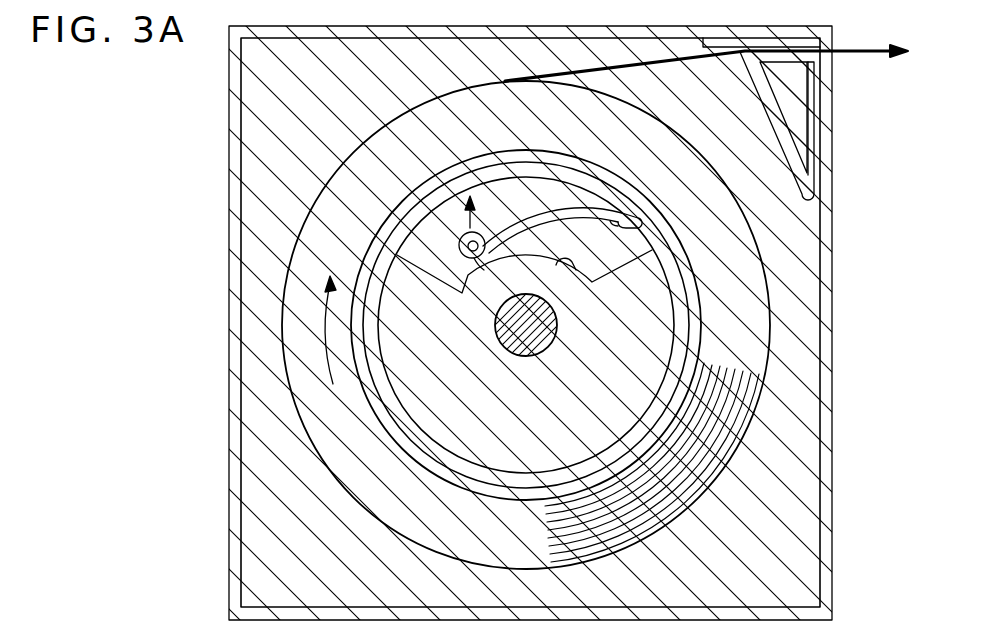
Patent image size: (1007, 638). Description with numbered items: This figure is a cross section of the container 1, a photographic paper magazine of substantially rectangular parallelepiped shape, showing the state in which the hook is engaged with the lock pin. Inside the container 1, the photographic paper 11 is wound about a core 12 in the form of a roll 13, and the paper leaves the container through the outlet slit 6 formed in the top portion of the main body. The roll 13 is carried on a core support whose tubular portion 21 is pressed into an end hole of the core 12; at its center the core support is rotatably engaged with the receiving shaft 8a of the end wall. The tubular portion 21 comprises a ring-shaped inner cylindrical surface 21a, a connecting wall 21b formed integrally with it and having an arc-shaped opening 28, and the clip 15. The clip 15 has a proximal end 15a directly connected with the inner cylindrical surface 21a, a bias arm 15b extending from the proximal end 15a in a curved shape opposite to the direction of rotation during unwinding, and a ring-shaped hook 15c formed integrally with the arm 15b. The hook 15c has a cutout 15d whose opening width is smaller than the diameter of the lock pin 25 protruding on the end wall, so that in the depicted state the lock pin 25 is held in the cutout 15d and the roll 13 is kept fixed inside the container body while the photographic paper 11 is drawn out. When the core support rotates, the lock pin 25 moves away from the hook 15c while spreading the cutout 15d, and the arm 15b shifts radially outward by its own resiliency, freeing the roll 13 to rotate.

The container 1 is at (229, 306).
The outlet slit 6 is at (840, 45).
The receiving shaft 8a is at (523, 357).
The photographic paper 11 is at (702, 52).
The core 12 is at (362, 443).
The roll 13 is at (540, 125).
The clip 15 is at (580, 210).
The proximal end 15a is at (641, 225).
The bias arm 15b is at (600, 228).
The hook 15c is at (487, 240).
The cutout 15d is at (452, 283).
The tubular portion 21 is at (412, 453).
The inner cylindrical surface 21a is at (686, 348).
The connecting wall 21b is at (620, 400).
The lock pin 25 is at (483, 268).
The arc-shaped opening 28 is at (574, 270).